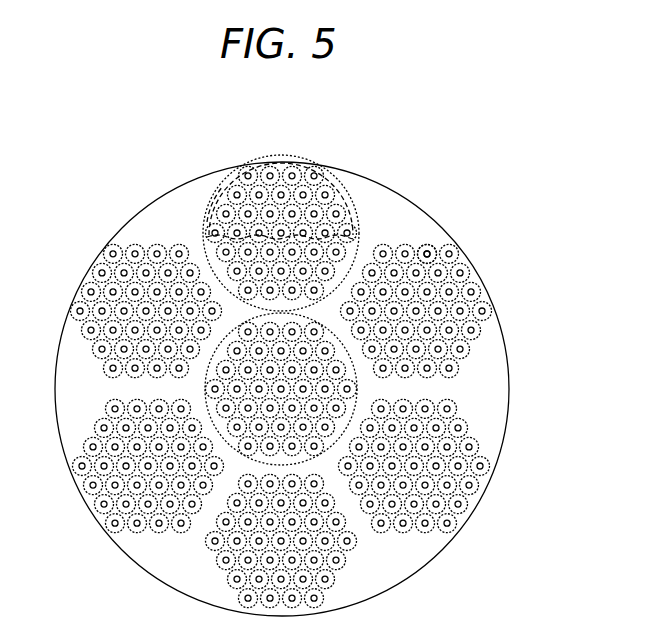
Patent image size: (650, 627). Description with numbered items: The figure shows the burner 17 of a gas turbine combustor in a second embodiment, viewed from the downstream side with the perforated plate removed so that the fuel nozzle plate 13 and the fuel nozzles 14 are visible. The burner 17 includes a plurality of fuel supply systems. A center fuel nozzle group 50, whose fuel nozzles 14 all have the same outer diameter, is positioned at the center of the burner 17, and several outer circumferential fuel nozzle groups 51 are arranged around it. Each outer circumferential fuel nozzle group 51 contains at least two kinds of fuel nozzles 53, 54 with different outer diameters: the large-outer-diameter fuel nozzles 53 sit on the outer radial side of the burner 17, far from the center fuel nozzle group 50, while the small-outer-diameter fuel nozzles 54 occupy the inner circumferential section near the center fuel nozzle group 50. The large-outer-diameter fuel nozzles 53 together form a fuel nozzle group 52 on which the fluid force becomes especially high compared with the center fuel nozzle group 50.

The fuel nozzle plate 13 is at (393, 200).
The fuel nozzle 14 is at (434, 249).
The burner 17 is at (509, 358).
The center fuel nozzle group 50 is at (356, 392).
The outer circumferential fuel nozzle group 51 is at (293, 160).
The fuel nozzle group 52 is at (265, 167).
The large-outer-diameter fuel nozzle 53 is at (205, 223).
The small-outer-diameter fuel nozzle 54 is at (205, 247).